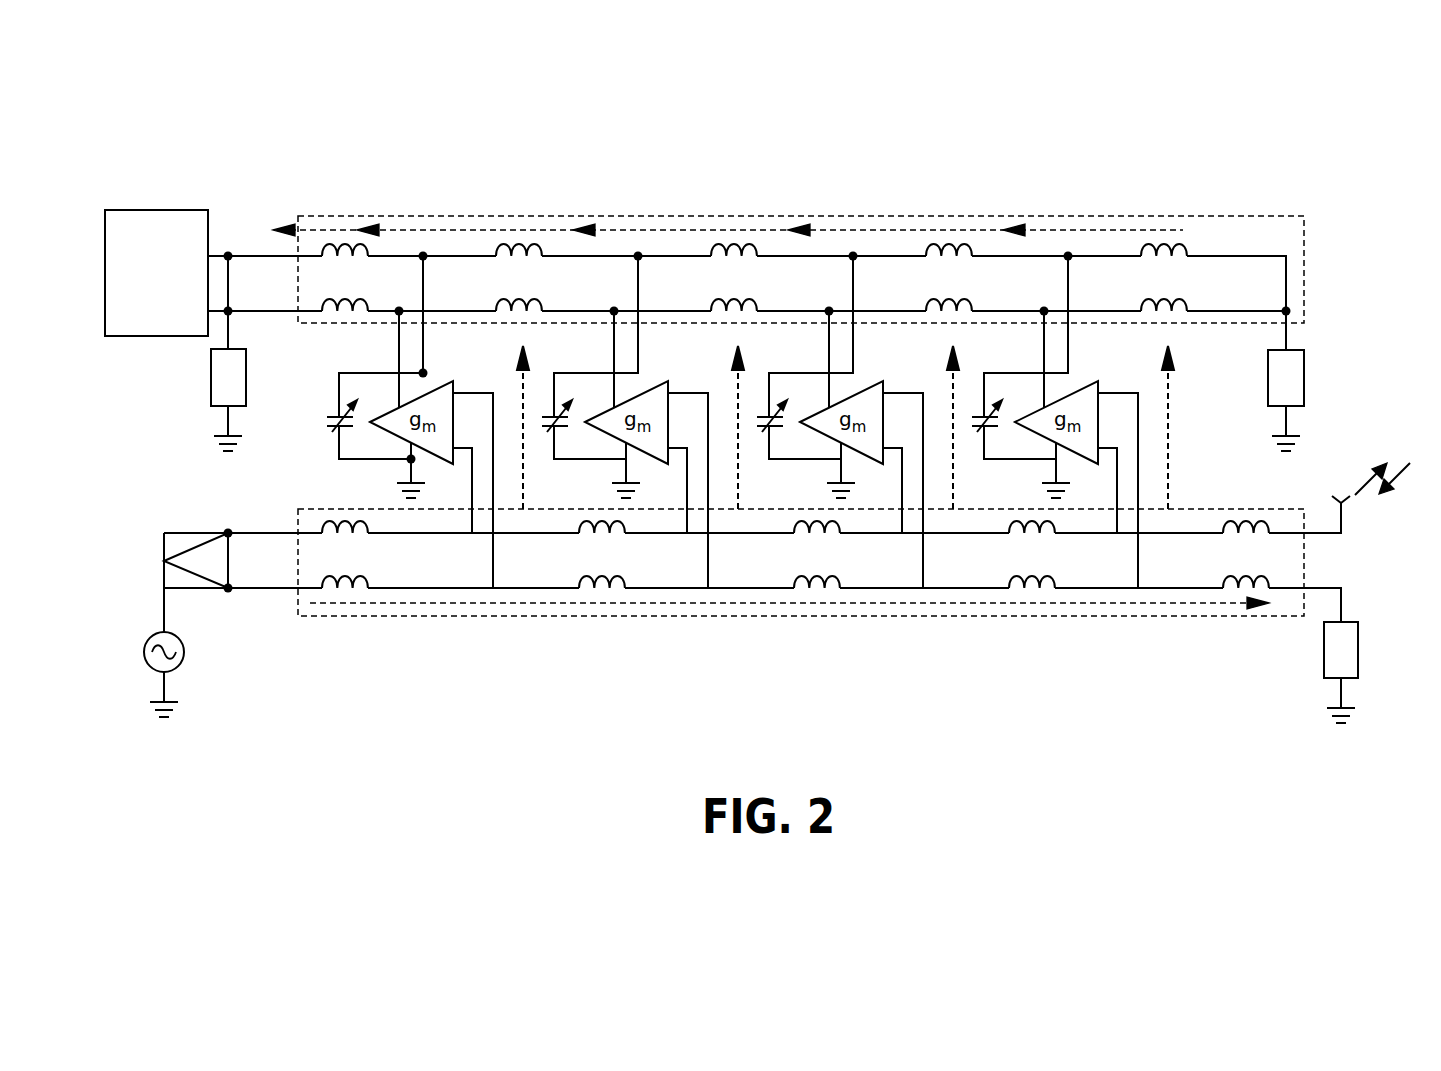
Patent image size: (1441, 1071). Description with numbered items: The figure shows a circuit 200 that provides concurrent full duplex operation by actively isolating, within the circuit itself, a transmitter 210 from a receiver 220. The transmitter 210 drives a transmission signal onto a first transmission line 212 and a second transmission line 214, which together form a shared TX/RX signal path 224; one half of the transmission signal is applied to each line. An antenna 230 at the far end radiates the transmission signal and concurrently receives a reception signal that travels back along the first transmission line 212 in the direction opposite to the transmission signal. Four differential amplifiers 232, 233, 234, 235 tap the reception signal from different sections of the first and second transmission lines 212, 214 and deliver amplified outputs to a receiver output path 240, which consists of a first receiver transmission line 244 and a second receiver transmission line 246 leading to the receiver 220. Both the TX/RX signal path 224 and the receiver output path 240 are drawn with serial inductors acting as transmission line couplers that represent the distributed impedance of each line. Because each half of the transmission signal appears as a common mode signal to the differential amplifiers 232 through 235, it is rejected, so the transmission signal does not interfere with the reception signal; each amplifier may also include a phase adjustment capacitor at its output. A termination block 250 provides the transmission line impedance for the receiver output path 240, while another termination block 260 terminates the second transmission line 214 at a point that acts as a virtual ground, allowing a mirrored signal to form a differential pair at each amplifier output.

The circuit 200 is at (1212, 132).
The transmitter 210 is at (145, 652).
The first transmission line 212 is at (268, 530).
The second transmission line 214 is at (270, 592).
The receiver 220 is at (157, 210).
The TX/RX signal path 224 is at (800, 640).
The antenna 230 is at (1341, 503).
The differential amplifier 232 is at (428, 422).
The differential amplifier 233 is at (643, 422).
The differential amplifier 234 is at (858, 422).
The differential amplifier 235 is at (1073, 422).
The receiver output path 240 is at (800, 196).
The first receiver transmission line 244 is at (262, 254).
The second receiver transmission line 246 is at (275, 312).
The termination block 250 is at (1304, 378).
The termination block 260 is at (1358, 650).